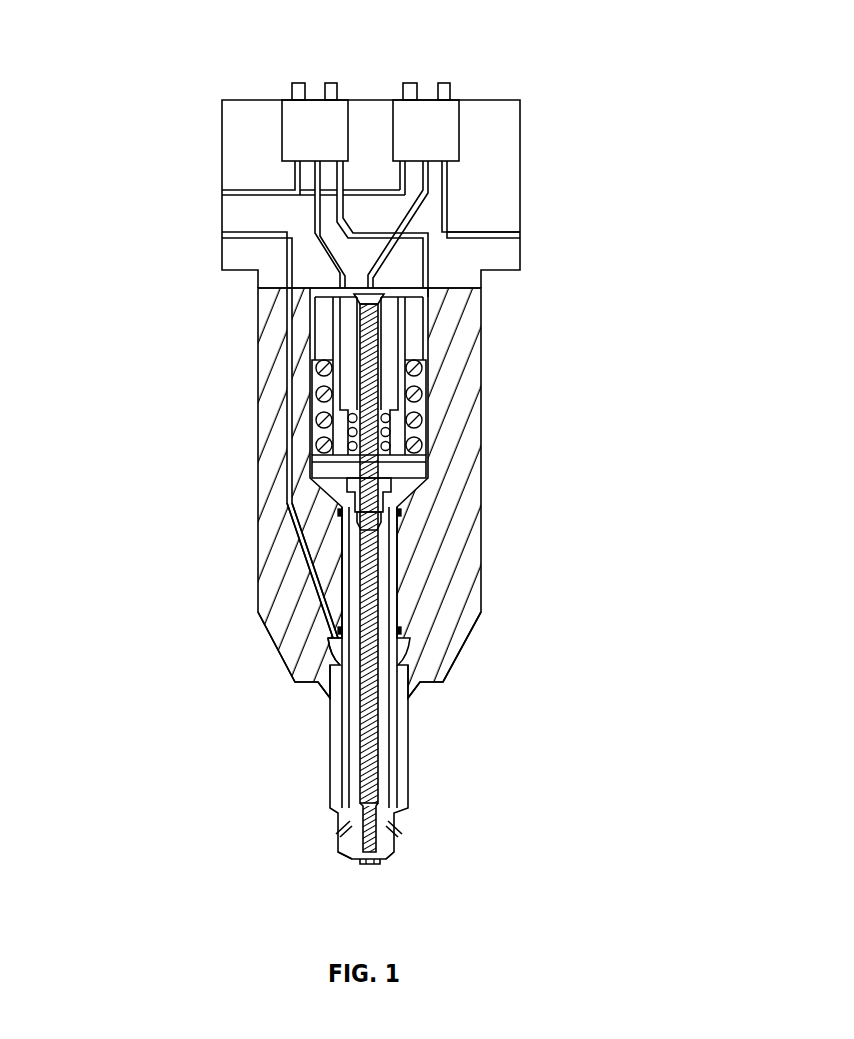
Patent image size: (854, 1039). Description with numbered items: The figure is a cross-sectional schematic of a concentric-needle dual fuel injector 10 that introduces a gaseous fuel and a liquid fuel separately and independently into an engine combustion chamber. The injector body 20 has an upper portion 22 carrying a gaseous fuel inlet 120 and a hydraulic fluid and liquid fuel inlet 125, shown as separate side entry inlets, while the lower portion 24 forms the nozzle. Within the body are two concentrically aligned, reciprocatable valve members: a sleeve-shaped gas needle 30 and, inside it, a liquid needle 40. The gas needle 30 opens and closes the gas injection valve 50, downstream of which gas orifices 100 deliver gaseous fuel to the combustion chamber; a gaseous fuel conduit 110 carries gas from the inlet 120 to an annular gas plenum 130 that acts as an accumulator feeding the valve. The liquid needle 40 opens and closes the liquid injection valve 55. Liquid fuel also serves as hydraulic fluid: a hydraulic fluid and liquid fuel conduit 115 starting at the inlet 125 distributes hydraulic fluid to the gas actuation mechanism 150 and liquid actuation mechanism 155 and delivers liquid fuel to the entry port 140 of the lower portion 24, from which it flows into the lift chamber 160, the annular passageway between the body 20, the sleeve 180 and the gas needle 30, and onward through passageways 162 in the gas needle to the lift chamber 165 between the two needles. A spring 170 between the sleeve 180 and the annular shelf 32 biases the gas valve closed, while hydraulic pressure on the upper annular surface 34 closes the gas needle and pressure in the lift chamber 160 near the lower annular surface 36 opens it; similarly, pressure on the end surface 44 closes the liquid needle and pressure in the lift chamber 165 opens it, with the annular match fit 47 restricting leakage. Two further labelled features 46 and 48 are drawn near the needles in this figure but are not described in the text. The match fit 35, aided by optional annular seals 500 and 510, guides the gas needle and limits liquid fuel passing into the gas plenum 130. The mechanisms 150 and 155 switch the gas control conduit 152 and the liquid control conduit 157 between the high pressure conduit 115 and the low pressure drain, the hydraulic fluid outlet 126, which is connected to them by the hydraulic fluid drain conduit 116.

The concentric-needle dual fuel injector 10 is at (673, 137).
The injector body 20 is at (250, 378).
The upper portion 22 is at (222, 150).
The lower portion 24 is at (258, 572).
The gas needle 30 is at (348, 723).
The annular shelf 32 is at (312, 448).
The upper annular surface 34 is at (332, 289).
The annular match fit 35 is at (398, 586).
The lower annular surface 36 is at (402, 512).
The liquid needle 40 is at (367, 785).
The end surface 44 is at (432, 294).
The armature stem 46 is at (412, 488).
The annular match fit 47 is at (400, 548).
The nozzle seat 48 is at (408, 829).
The gas injection valve 50 is at (334, 823).
The liquid injection valve 55 is at (377, 850).
The gas orifices 100 is at (340, 837).
The gaseous fuel conduit 110 is at (305, 438).
The hydraulic fluid and liquid fuel conduit 115 is at (495, 233).
The hydraulic fluid drain conduit 116 is at (238, 188).
The gaseous fuel inlet 120 is at (222, 233).
The hydraulic fluid and liquid fuel inlet 125 is at (520, 233).
The hydraulic fluid outlet 126 is at (222, 190).
The annular gas plenum 130 is at (335, 658).
The entry port 140 is at (392, 298).
The gas actuation mechanism 150 is at (322, 127).
The gas control conduit 152 is at (317, 213).
The liquid actuation mechanism 155 is at (440, 127).
The liquid control conduit 157 is at (449, 205).
The lift chamber 160 is at (418, 420).
The passageways 162 is at (300, 522).
The lift chamber 165 is at (315, 460).
The spring 170 is at (427, 366).
The sleeve 180 is at (322, 334).
The annular seal 500 is at (402, 500).
The annular seal 510 is at (400, 628).